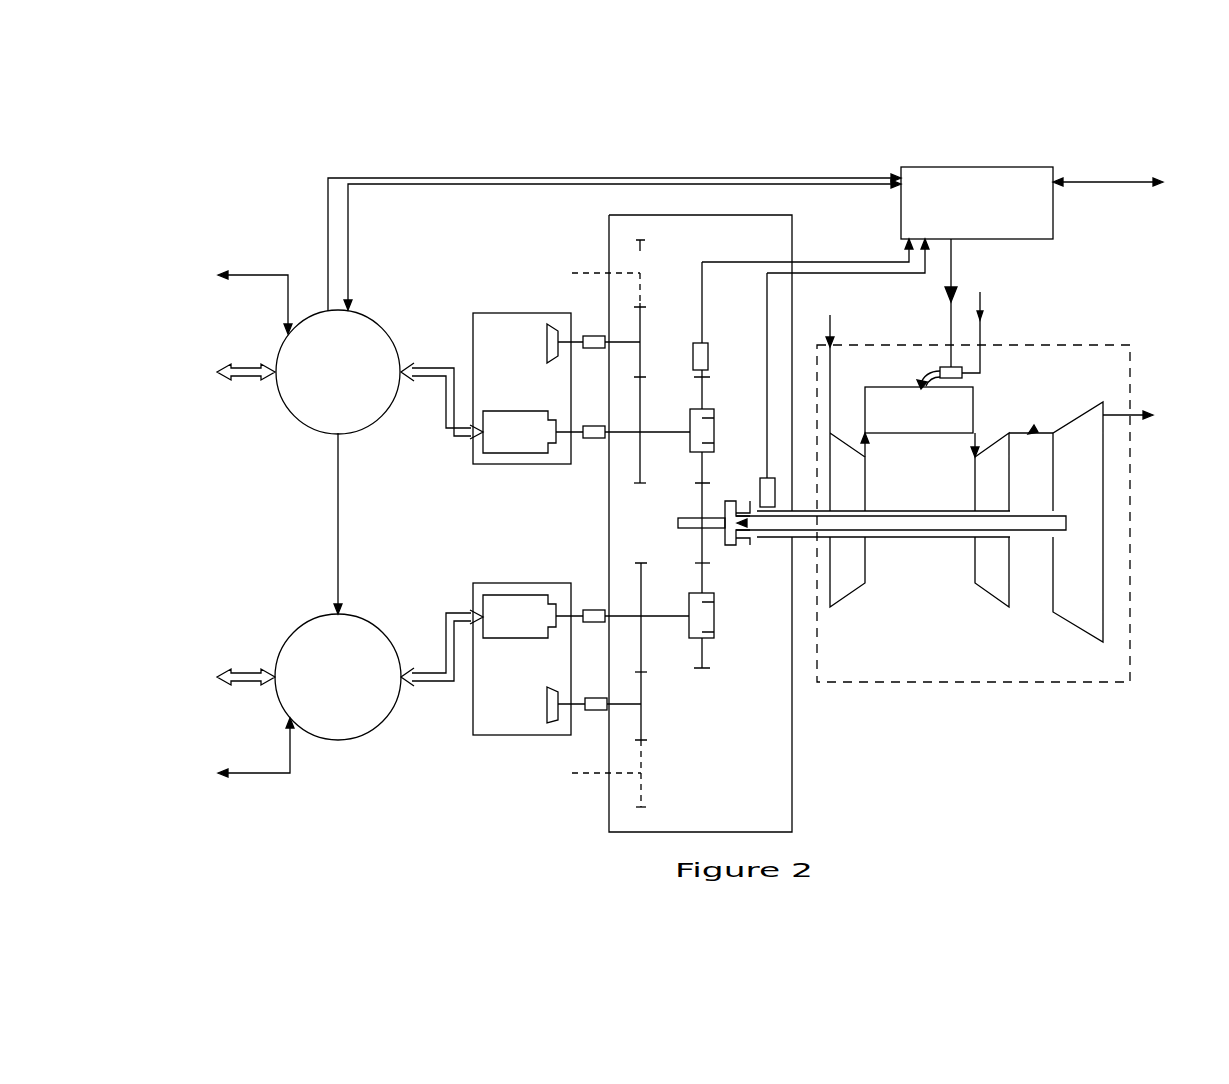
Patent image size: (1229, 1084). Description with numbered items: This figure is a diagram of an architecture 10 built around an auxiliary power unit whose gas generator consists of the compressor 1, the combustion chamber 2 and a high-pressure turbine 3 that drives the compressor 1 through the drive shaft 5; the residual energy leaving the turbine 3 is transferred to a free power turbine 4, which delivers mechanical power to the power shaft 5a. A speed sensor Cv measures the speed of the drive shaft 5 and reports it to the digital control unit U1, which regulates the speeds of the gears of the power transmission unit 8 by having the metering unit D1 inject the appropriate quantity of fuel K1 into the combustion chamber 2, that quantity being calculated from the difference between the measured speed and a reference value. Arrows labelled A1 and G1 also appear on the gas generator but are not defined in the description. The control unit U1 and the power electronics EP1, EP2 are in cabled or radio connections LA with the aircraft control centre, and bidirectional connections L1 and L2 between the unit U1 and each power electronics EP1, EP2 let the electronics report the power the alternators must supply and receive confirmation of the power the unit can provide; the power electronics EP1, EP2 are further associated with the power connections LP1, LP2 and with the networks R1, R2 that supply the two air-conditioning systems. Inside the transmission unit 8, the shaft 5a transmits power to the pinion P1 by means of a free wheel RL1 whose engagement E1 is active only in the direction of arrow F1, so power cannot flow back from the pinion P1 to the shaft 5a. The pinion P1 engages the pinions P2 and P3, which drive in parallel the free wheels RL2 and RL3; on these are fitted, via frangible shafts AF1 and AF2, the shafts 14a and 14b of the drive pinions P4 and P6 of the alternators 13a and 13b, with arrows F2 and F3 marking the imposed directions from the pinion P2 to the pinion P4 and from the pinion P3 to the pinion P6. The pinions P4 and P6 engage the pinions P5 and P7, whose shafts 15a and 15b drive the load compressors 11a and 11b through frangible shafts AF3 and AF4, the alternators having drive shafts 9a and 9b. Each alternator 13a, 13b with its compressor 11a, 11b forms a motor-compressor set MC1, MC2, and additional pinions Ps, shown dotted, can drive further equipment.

The digital control unit U1 is at (1053, 167).
The power transmission gearbox 8 is at (791, 215).
The power electronics EP1 is at (338, 372).
The power electronics EP2 is at (338, 586).
The aircraft connections LA is at (686, 479).
The network R1 is at (217, 390).
The network R2 is at (217, 697).
The bidirectional connection L1 is at (443, 186).
The bidirectional connection L2 is at (443, 178).
The power connection LP1 is at (424, 360).
The power connection LP2 is at (452, 612).
The motor-compressor set MC1 is at (487, 313).
The motor-compressor set MC2 is at (497, 583).
The alternator 13a is at (513, 453).
The alternator 13b is at (515, 595).
The load compressor 11a is at (549, 324).
The load compressor 11b is at (548, 722).
The frangible shaft AF1 is at (594, 426).
The frangible shaft AF2 is at (594, 610).
The frangible shaft AF3 is at (594, 336).
The frangible shaft AF4 is at (596, 711).
The shaft 15a is at (590, 348).
The shaft 15b is at (590, 698).
The drive shaft 9a is at (624, 433).
The drive shaft 9b is at (620, 617).
The shaft 14a is at (672, 431).
The shaft 14b is at (672, 624).
The additional pinions Ps is at (644, 264).
The pinion P5 is at (645, 333).
The drive pinion P4 is at (646, 482).
The drive pinion P6 is at (647, 608).
The pinion P7 is at (645, 691).
The pinion P1 is at (698, 504).
The pinion P2 is at (703, 397).
The pinion P3 is at (706, 568).
The free wheel RL1 is at (722, 546).
The free wheel RL2 is at (690, 405).
The free wheel RL3 is at (718, 645).
The speed sensor Cv is at (710, 355).
The arrow F2 is at (708, 432).
The arrow F3 is at (708, 612).
The arrow F1 is at (748, 540).
The engagement E1 is at (747, 503).
The fuel K1 is at (970, 306).
The metering unit D1 is at (938, 368).
The architecture 10 is at (1105, 357).
The air flow A1 is at (866, 455).
The combustion chamber 2 is at (865, 405).
The compressor 1 is at (850, 590).
The HP turbine 3 is at (985, 590).
The power turbine 4 is at (1067, 613).
The exhaust gas flow G1 is at (977, 448).
The drive shaft 5 is at (930, 535).
The power shaft 5a is at (930, 525).